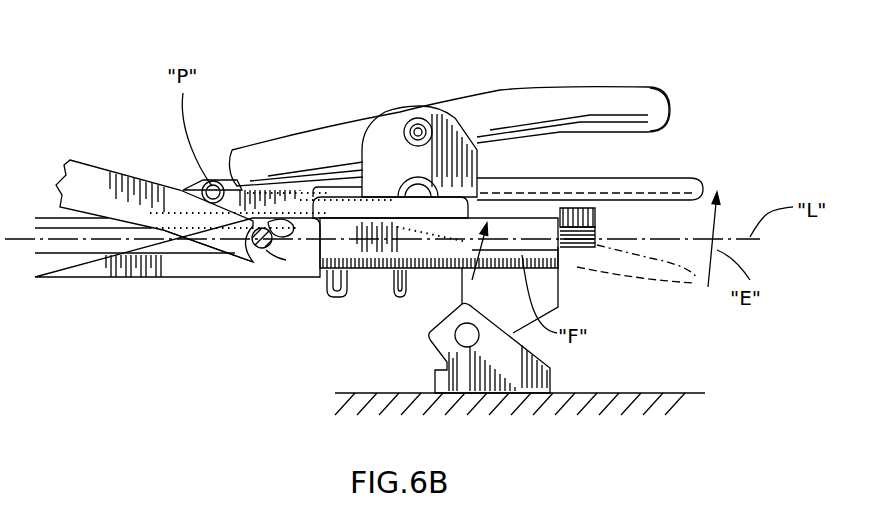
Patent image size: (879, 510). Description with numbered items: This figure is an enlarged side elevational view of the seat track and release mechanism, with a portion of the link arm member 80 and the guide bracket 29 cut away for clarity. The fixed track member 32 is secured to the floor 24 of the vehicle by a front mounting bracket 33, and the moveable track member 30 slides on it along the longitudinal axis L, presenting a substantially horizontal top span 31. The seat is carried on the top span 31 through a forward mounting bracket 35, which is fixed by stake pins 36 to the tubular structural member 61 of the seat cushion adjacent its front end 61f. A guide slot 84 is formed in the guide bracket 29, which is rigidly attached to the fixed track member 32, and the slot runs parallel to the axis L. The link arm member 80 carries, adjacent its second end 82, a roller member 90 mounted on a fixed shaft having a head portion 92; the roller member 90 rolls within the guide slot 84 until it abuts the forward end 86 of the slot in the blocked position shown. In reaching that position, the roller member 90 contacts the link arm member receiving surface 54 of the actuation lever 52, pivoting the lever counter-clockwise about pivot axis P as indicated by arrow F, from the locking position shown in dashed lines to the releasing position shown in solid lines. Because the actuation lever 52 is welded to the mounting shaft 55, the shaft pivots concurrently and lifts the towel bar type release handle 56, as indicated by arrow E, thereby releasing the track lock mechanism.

The link arm member 80 is at (85, 182).
The mounting shaft 55 is at (237, 188).
The stake pins 36 is at (420, 128).
The tubular structural member 61 is at (630, 98).
The front end 61f is at (667, 103).
The forward mounting brackets 35 is at (460, 158).
The top span 31 is at (560, 207).
The moveable track member 30 is at (595, 215).
The fixed track member 32 is at (560, 247).
The release handle 56 is at (683, 280).
The floor 24 is at (600, 393).
The front mounting brackets 33 is at (507, 393).
The actuation lever 52 is at (397, 202).
The link arm member receiving surface 54 is at (345, 268).
The second end 82 is at (283, 250).
The forward end 86 is at (278, 263).
The roller member 90 is at (265, 255).
The head portion 92 is at (250, 252).
The guide bracket 29 is at (98, 270).
The guide slot 84 is at (70, 247).